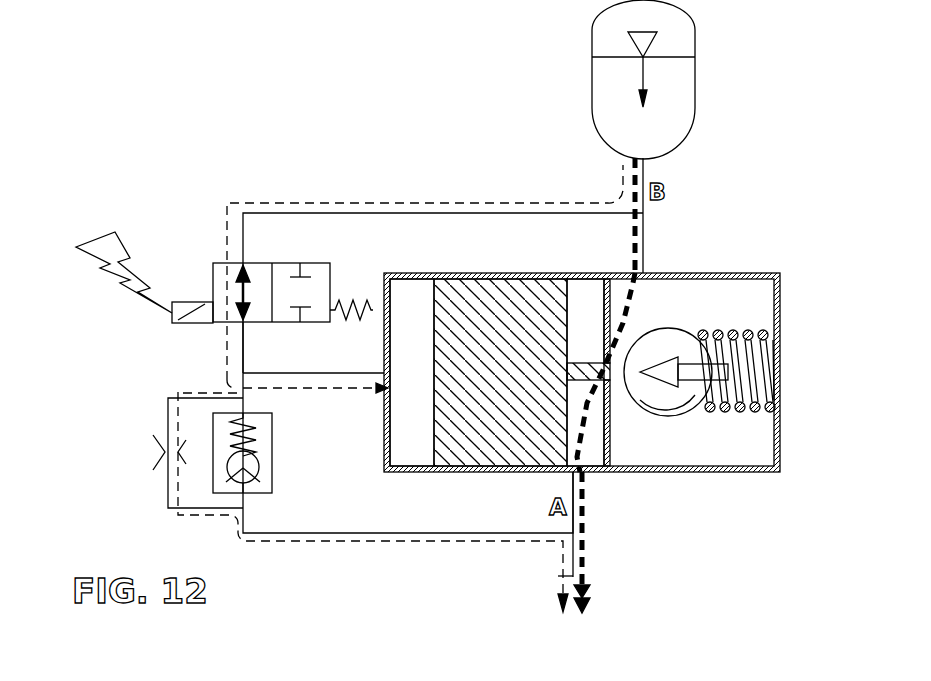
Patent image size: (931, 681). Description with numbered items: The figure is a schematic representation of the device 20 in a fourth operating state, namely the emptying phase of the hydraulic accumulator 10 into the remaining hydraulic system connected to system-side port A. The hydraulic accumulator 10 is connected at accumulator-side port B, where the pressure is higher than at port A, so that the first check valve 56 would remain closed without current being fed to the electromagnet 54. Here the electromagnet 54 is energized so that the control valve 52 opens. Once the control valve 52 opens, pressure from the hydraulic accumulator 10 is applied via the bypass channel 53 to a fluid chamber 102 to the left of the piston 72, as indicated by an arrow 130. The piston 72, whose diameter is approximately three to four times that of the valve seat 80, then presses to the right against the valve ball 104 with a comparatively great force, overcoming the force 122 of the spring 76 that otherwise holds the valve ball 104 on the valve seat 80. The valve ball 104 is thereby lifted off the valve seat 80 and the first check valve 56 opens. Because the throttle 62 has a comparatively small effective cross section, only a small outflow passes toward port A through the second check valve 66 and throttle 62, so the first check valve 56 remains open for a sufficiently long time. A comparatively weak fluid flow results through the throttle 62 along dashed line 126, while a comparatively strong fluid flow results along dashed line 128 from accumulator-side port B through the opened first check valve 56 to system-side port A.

The hydraulic accumulator 10 is at (695, 73).
The device 20 is at (436, 124).
The control valve 52 is at (213, 245).
The bypass channel 53 is at (354, 213).
The electromagnet 54 is at (180, 302).
The first check valve 56 is at (738, 298).
The throttle 62 is at (152, 452).
The second check valve 66 is at (272, 450).
The piston 72 is at (493, 315).
The spring 76 is at (733, 330).
The valve seat 80 is at (636, 318).
The fluid chamber 102 is at (407, 315).
The valve ball 104 is at (673, 338).
The force of spring 122 is at (720, 373).
The dashed line 126 is at (272, 203).
The dashed line 128 is at (585, 515).
The arrow 130 is at (308, 390).